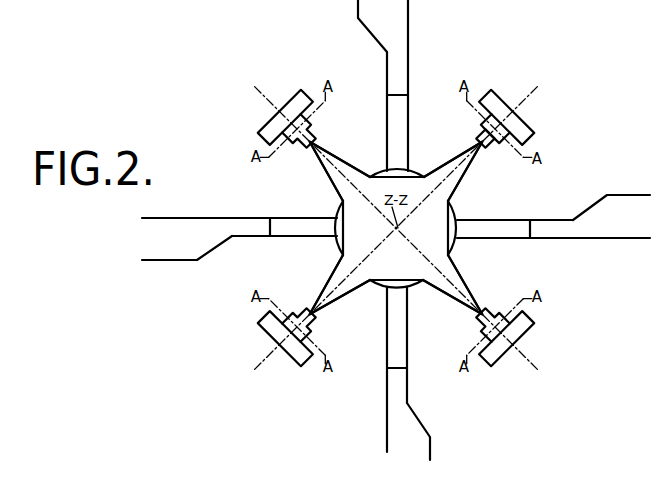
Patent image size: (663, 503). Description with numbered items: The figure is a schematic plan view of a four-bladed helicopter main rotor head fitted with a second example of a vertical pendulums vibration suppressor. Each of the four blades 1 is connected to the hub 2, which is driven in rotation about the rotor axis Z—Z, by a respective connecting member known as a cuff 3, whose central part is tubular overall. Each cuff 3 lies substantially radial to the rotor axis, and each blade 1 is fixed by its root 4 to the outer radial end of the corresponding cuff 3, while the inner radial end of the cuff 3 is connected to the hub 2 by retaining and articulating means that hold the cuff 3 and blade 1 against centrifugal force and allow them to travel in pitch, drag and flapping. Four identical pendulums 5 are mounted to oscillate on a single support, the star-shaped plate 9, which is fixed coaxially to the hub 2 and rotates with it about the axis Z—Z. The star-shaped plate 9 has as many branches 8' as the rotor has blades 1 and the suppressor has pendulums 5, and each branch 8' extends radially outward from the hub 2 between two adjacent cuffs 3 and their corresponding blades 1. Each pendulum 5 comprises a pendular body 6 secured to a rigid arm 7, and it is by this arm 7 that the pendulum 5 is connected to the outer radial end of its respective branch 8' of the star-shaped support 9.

The blade 1 is at (390, 13).
The hub 2 is at (387, 285).
The cuff 3 is at (397, 125).
The root 4 is at (397, 70).
The pendulum 5 is at (268, 110).
The pendular body 6 is at (522, 128).
The rigid arm 7 is at (478, 132).
The branch 8' is at (396, 214).
The star-shaped plate 9 is at (413, 283).